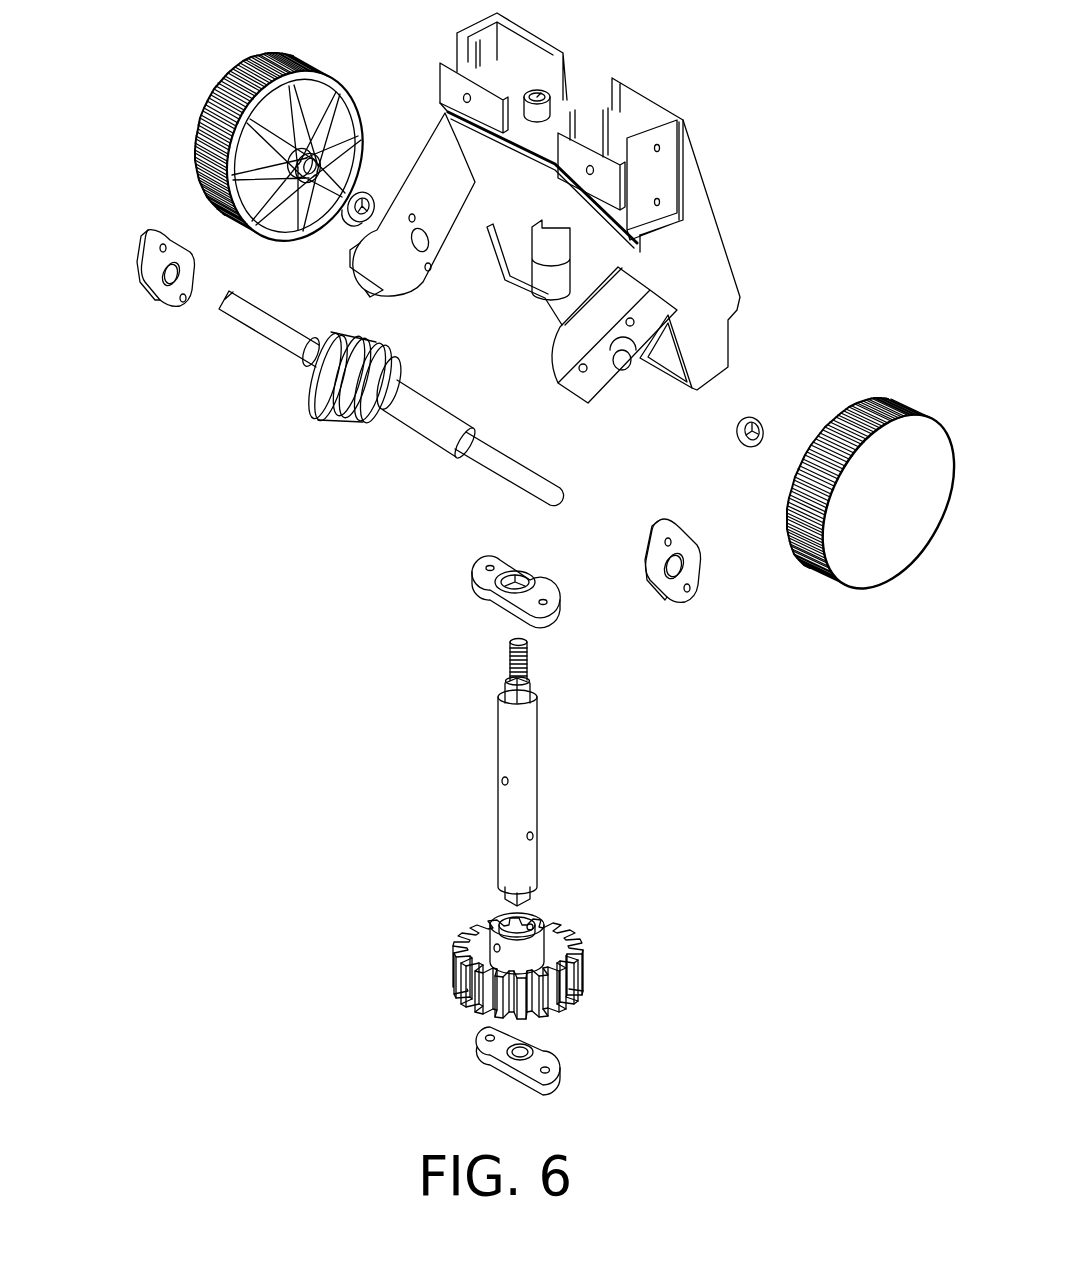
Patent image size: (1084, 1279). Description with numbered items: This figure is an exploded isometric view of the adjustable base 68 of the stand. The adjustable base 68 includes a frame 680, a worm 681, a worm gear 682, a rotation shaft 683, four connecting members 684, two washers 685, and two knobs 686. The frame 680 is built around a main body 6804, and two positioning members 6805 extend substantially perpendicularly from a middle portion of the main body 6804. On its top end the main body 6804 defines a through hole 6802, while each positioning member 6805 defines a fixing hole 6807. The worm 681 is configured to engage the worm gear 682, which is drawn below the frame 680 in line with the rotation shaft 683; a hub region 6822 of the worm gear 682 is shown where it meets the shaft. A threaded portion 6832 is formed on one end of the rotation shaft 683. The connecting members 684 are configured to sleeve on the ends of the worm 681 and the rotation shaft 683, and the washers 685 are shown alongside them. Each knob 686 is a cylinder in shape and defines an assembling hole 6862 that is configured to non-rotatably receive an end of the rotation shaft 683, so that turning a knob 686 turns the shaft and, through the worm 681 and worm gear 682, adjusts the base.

The adjustable base 68 is at (725, 60).
The frame 680 is at (710, 140).
The worm 681 is at (285, 380).
The worm gear 682 is at (592, 935).
The rotation shaft 683 is at (490, 766).
The connecting member 684 is at (145, 225).
The washer 685 is at (362, 187).
The knob 686 is at (205, 112).
The through hole 6802 is at (550, 95).
The main body 6804 is at (700, 255).
The positioning member 6805 is at (677, 313).
The fixing hole 6807 is at (628, 366).
The gear hub 6822 is at (498, 920).
The threaded portion 6832 is at (528, 670).
The assembling hole 6862 is at (333, 128).